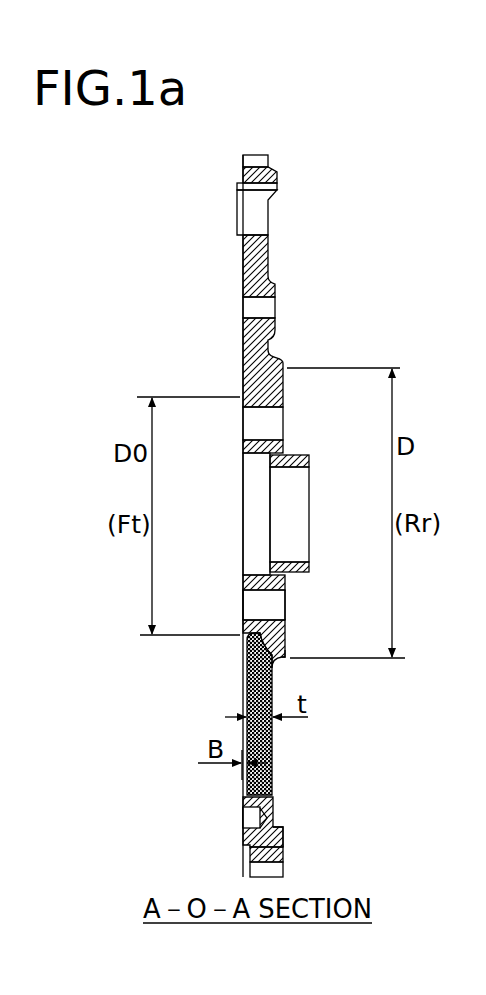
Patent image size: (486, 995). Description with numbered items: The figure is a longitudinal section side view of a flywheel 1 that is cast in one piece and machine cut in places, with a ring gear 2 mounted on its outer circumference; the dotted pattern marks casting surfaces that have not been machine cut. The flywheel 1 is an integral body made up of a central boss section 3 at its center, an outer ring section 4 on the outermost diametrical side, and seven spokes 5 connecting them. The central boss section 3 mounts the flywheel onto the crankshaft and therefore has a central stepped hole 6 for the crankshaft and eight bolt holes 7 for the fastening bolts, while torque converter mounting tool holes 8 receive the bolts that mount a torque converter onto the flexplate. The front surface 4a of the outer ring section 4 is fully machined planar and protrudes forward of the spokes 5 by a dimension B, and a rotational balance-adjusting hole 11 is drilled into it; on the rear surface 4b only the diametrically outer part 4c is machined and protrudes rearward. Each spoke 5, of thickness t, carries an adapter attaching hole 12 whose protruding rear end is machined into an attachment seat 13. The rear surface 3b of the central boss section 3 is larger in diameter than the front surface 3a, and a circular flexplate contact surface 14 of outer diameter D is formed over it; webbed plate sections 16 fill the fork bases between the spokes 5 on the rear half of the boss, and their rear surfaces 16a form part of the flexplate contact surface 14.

The flywheel 1 is at (273, 351).
The ring gear 2 is at (252, 157).
The central boss section 3 is at (249, 578).
The front surface 3a is at (243, 604).
The rear surface 3b is at (286, 605).
The outer ring section 4 is at (270, 810).
The front surface 4a is at (243, 822).
The rear surface 4b is at (274, 822).
The part 4c is at (284, 853).
The spokes 5 is at (243, 348).
The central stepped hole 6 is at (299, 512).
The bolt holes 7 is at (257, 602).
The torque converter mounting tool holes 8 is at (248, 213).
The rotational balance-adjusting hole 11 is at (243, 813).
The adapter attaching hole 12 is at (252, 309).
The attachment seat 13 is at (275, 289).
The flexplate contact surface 14 is at (288, 396).
The plate sections 16 is at (270, 643).
The rear surfaces 16a is at (290, 656).